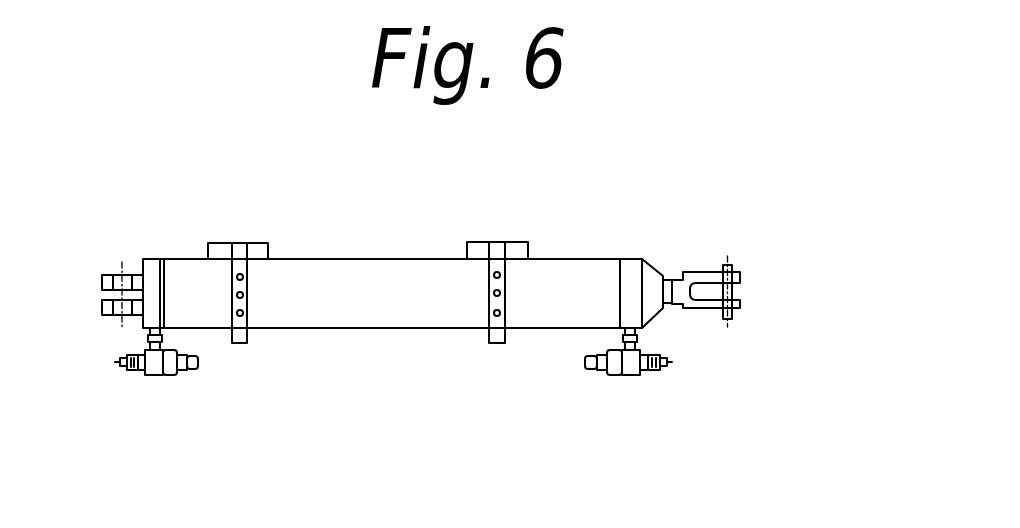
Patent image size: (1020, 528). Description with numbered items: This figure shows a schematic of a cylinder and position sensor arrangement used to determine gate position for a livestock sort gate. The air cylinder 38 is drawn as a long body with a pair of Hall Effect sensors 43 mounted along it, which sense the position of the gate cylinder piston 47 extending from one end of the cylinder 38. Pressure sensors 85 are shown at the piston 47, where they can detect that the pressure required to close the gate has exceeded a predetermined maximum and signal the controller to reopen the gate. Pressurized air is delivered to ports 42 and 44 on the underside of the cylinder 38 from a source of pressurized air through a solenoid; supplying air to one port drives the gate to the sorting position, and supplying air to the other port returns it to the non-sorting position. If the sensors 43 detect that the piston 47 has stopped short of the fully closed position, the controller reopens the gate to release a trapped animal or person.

The air cylinder 38 is at (352, 283).
The Hall Effect sensors 43 is at (242, 243).
The gate cylinder piston 47 is at (665, 283).
The pressure sensors 85 is at (732, 292).
The port 42 is at (158, 377).
The port 44 is at (628, 375).